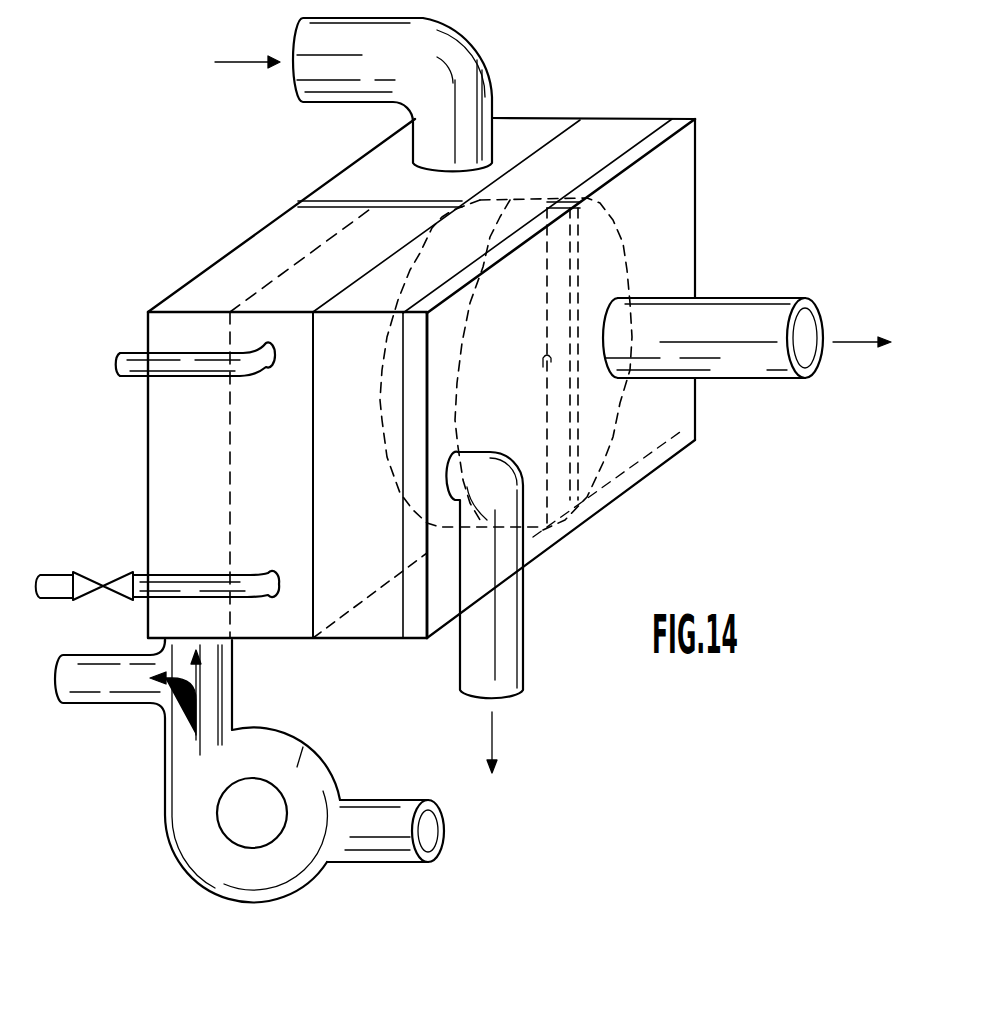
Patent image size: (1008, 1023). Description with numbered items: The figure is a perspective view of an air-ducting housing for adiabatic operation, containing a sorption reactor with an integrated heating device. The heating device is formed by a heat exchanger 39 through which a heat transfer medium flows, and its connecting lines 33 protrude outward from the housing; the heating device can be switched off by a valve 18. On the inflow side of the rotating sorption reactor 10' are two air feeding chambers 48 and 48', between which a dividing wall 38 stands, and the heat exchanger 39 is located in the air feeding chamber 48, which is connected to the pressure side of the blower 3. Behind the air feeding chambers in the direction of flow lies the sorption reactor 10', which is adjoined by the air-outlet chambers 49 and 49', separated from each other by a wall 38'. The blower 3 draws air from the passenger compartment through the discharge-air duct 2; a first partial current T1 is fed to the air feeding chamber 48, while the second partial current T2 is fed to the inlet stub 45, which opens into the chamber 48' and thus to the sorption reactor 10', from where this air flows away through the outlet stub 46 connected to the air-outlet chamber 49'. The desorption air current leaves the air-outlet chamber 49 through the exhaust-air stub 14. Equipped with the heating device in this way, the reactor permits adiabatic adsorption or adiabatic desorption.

The discharge-air duct 2 is at (380, 815).
The blower 3 is at (300, 760).
The rotating sorption reactor 10' is at (506, 299).
The exhaust-air stub 14 is at (512, 628).
The valve 18 is at (118, 575).
The connecting lines 33 is at (143, 575).
The dividing wall 38 is at (321, 393).
The wall 38' is at (610, 377).
The heat exchanger 39 is at (297, 277).
The inlet stub 45 is at (457, 37).
The outlet stub 46 is at (745, 358).
The air feeding chamber 48 is at (278, 433).
The air feeding chamber 48' is at (281, 215).
The air-outlet chamber 49 is at (412, 511).
The air-outlet chamber 49' is at (552, 190).
The first partial current T1 is at (232, 680).
The second partial current T2 is at (163, 712).